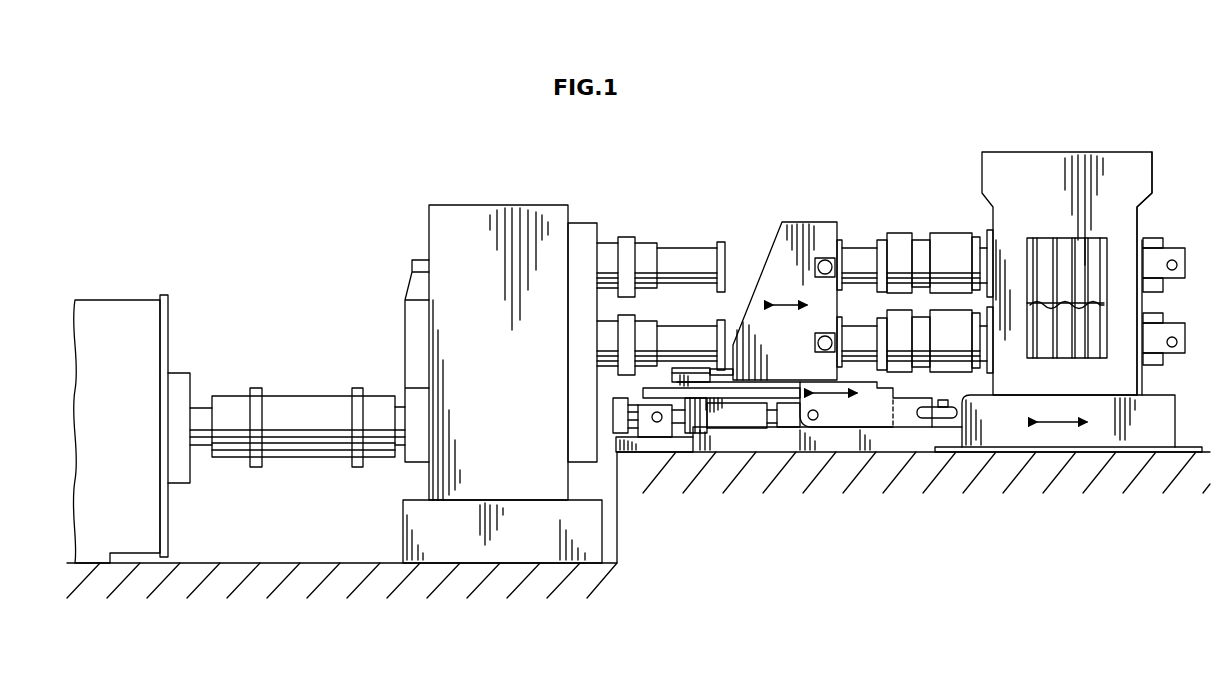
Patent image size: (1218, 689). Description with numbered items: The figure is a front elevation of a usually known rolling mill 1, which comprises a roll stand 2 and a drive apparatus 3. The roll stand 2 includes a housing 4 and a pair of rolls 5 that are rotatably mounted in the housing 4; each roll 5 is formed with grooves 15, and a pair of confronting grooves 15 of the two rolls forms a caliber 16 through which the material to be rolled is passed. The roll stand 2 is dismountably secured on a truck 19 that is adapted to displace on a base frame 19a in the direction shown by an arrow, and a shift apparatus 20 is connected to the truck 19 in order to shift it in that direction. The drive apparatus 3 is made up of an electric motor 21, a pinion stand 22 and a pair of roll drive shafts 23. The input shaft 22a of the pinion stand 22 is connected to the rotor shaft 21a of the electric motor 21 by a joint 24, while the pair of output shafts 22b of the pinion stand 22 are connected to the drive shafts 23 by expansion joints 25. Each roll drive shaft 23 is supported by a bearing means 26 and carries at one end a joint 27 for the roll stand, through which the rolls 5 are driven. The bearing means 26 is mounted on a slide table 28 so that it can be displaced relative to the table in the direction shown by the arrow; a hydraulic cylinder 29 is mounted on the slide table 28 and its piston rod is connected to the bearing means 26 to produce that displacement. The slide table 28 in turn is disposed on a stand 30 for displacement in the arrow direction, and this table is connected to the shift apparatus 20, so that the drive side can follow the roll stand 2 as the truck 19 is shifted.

The rolling mill 1 is at (914, 150).
The roll stand 2 is at (1113, 150).
The drive apparatus 3 is at (580, 190).
The housing 4 is at (1132, 160).
The roll 5 is at (1107, 268).
The groove 15 is at (1090, 265).
The caliber 16 is at (1040, 300).
The truck 19 is at (1025, 433).
The base frame 19a is at (1087, 452).
The shift apparatus 20 is at (745, 438).
The electric motor 21 is at (110, 303).
The rotor shaft 21a is at (198, 413).
The pinion stand 22 is at (463, 205).
The input shaft 22a is at (393, 420).
The output shaft 22b is at (643, 337).
The roll drive shaft 23 is at (857, 333).
The joint 24 is at (295, 396).
The expansion joint 25 is at (731, 318).
The bearing means 26 is at (790, 222).
The joint for the roll stand 27 is at (943, 325).
The slide table 28 is at (788, 385).
The hydraulic cylinder 29 is at (692, 373).
The stand 30 is at (838, 438).